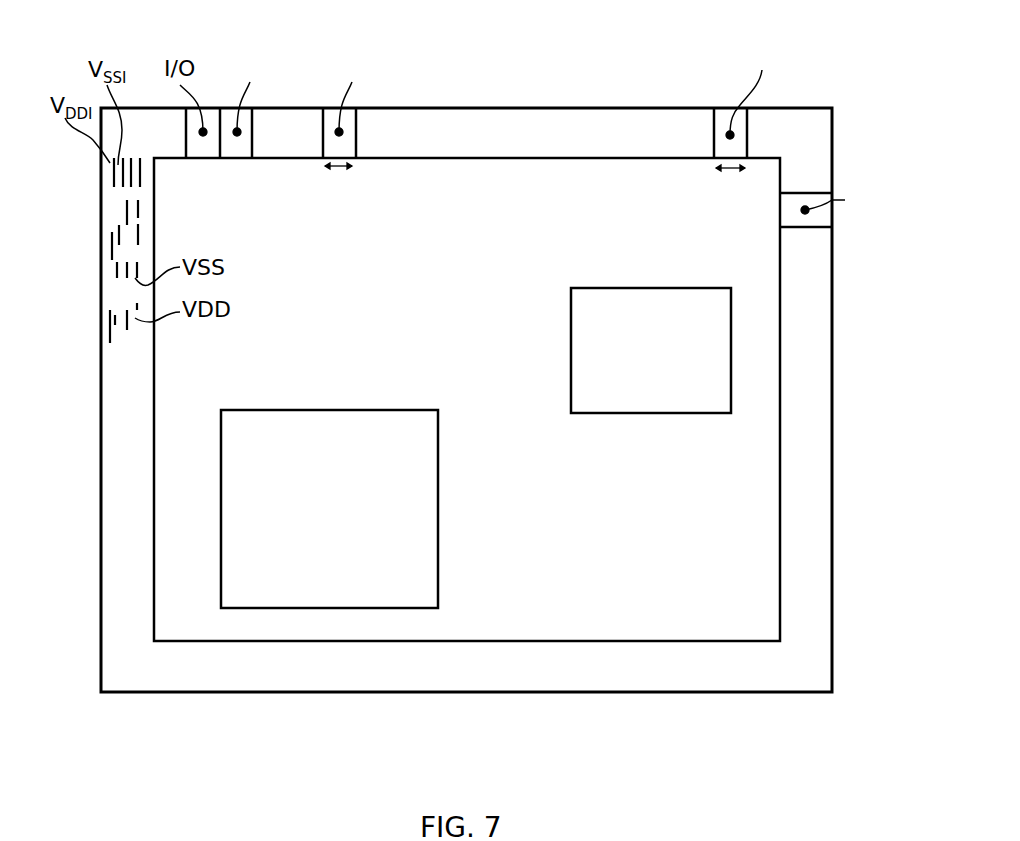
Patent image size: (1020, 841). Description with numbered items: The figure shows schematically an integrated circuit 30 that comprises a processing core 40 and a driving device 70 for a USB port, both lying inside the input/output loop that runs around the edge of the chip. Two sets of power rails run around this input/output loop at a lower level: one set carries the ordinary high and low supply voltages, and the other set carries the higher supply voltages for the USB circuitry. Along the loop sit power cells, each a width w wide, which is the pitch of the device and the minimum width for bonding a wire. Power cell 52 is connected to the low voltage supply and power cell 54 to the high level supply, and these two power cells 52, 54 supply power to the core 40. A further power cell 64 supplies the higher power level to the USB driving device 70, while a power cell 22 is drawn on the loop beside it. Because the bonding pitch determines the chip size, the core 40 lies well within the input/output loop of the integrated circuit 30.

The integrated circuit 30 is at (802, 704).
The VSSI pad 22 is at (730, 108).
The power cell 52 is at (355, 48).
The power cell 54 is at (255, 48).
The power cell 64 is at (832, 217).
The processing core 40 is at (330, 410).
The driving device 70 is at (647, 288).